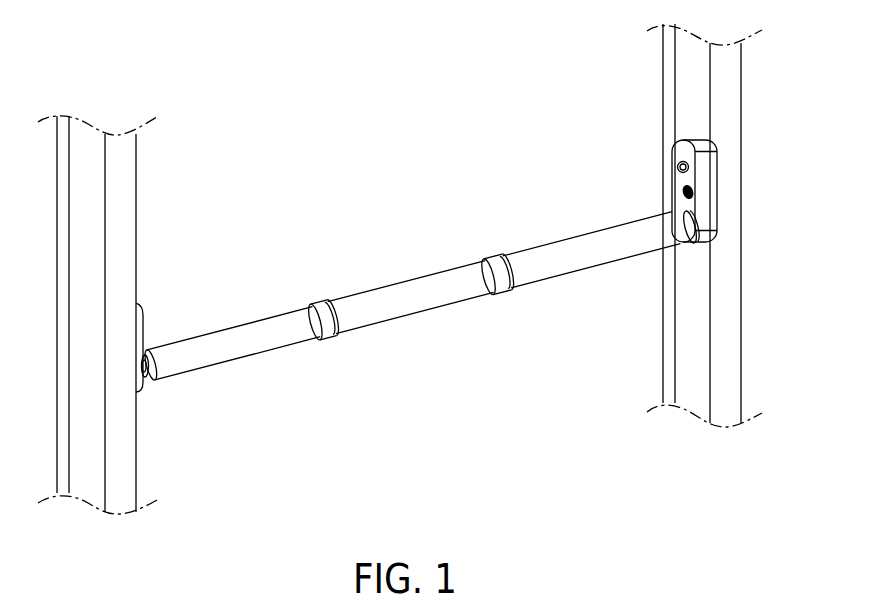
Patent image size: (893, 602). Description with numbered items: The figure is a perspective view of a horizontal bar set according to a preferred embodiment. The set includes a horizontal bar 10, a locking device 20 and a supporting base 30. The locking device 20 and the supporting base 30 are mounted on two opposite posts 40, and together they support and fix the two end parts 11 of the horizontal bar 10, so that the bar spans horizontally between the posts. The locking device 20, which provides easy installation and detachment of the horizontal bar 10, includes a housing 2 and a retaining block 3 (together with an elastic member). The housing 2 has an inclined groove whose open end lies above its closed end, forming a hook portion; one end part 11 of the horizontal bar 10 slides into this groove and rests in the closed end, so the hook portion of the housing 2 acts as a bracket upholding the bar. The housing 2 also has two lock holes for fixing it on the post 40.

The posts 40 is at (118, 428).
The horizontal bar 10 is at (399, 285).
The supporting base 30 is at (138, 342).
The locking device 20 is at (682, 199).
The housing 2 is at (708, 216).
The retaining block 3 is at (680, 202).
The end parts 11 is at (687, 240).